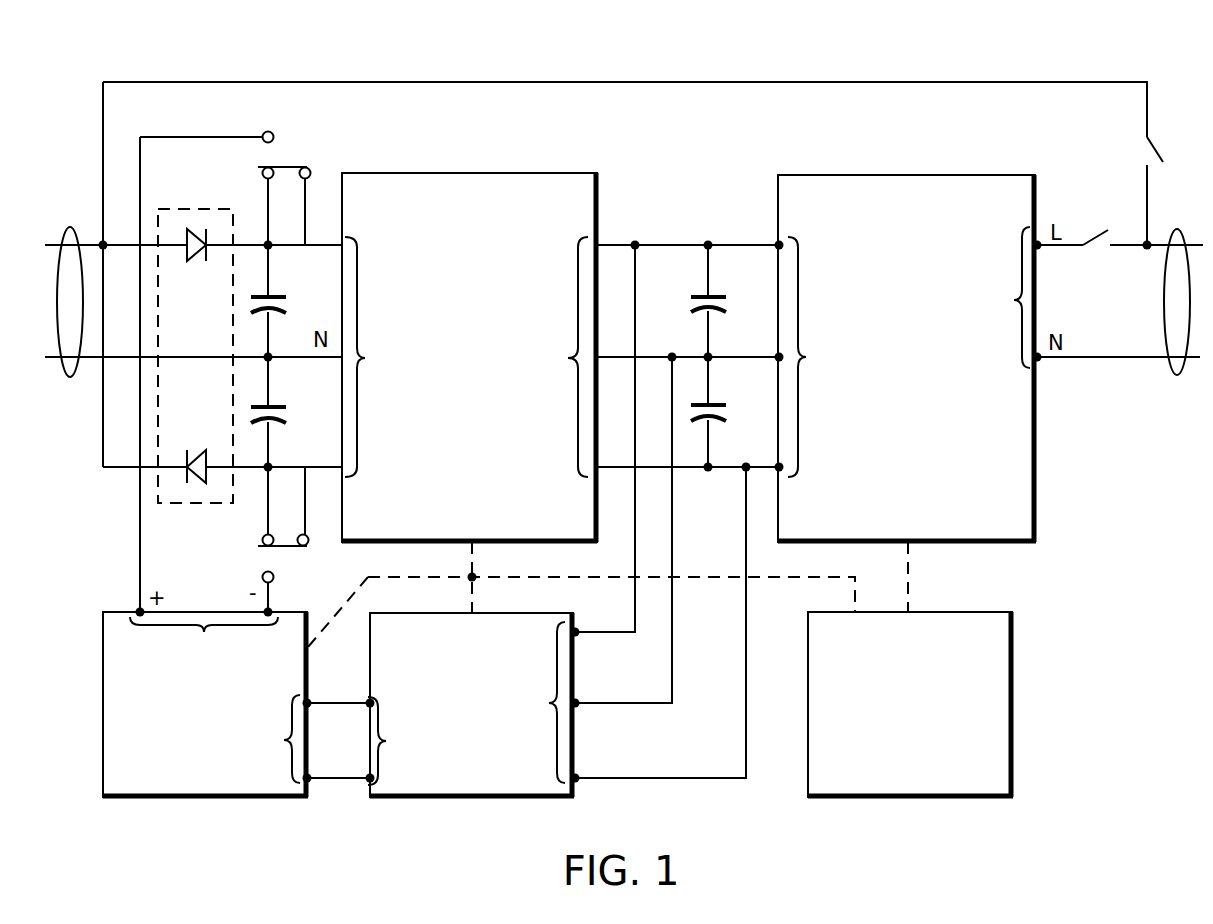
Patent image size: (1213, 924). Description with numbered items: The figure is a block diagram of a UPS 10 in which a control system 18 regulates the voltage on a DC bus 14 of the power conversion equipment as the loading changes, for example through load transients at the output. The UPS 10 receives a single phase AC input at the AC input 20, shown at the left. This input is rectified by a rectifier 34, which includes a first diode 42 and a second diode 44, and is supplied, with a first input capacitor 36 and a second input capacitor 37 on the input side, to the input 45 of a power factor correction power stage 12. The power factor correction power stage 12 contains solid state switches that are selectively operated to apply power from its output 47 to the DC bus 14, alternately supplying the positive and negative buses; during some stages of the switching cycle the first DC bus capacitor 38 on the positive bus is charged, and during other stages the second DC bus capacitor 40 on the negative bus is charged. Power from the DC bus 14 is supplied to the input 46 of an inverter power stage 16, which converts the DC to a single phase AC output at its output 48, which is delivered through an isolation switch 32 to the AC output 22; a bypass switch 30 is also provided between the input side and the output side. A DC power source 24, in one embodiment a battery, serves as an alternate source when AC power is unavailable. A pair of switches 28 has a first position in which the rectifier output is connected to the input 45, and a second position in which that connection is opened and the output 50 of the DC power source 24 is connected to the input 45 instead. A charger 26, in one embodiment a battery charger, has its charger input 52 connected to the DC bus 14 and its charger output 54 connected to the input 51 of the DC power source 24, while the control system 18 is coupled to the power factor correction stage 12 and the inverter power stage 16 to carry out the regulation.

The UPS 10 is at (1009, 60).
The power factor correction power stage 12 is at (548, 173).
The DC bus 14 is at (720, 242).
The inverter power stage 16 is at (983, 175).
The control system 18 is at (962, 612).
The AC input 20 is at (73, 230).
The AC output 22 is at (1178, 376).
The DC power source 24 is at (103, 745).
The charger 26 is at (576, 740).
The pair of switches 28 is at (287, 167).
The bypass switch 30 is at (1162, 157).
The isolation switch 32 is at (1095, 231).
The rectifier 34 is at (196, 209).
The first input capacitor 36 is at (280, 296).
The second input capacitor 37 is at (280, 406).
The first DC bus capacitor 38 is at (719, 298).
The second DC bus capacitor 40 is at (719, 406).
The first diode 42 is at (196, 262).
The second diode 44 is at (197, 450).
The input of the power factor correction power stage 45 is at (370, 357).
The input of the inverter power stage 46 is at (811, 357).
The output of the power factor correction power stage 47 is at (565, 357).
The output of the inverter power stage 48 is at (1006, 297).
The output of the DC power source 50 is at (204, 641).
The input of the DC power source 51 is at (283, 741).
The charger input 52 is at (541, 702).
The charger output 54 is at (363, 741).